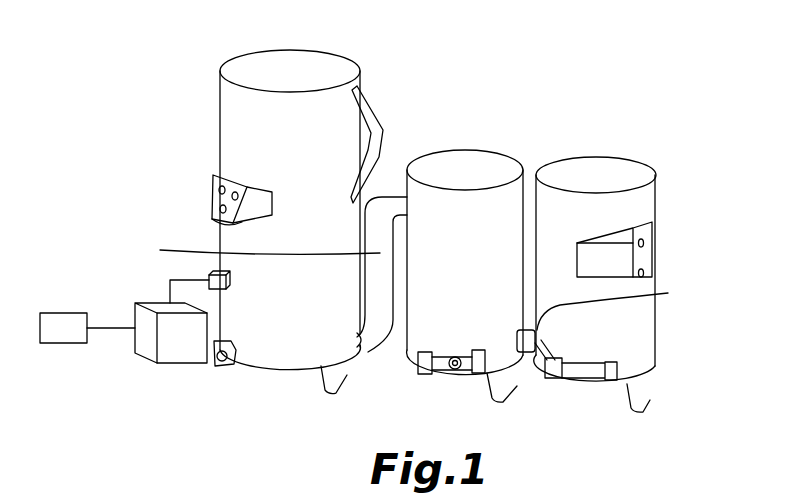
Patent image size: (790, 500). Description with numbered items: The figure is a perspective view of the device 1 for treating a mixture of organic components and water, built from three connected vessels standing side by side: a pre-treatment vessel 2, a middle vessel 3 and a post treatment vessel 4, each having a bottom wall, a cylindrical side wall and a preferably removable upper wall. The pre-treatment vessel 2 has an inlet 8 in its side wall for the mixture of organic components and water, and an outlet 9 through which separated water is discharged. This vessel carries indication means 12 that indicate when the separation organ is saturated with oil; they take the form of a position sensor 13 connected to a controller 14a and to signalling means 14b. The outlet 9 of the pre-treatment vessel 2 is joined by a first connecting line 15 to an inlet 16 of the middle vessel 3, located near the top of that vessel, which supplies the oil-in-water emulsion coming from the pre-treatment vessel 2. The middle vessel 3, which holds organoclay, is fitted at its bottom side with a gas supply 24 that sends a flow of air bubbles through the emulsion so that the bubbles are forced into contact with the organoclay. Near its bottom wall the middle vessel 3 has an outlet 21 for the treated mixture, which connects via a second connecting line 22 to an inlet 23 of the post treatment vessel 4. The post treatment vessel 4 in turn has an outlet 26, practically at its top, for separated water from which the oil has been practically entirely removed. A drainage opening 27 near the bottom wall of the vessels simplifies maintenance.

The device 1 is at (638, 135).
The pre-treatment vessel 2 is at (188, 107).
The middle vessel 3 is at (483, 142).
The post treatment vessel 4 is at (660, 197).
The inlet 8 is at (204, 205).
The outlet 9 is at (362, 347).
The indication means 12 is at (183, 382).
The position sensor 13 is at (208, 273).
The controller 14a is at (166, 364).
The signalling means 14b is at (63, 313).
The first connecting line 15 is at (255, 252).
The inlet 16 is at (402, 196).
The outlet 21 is at (528, 353).
The second connecting line 22 is at (614, 308).
The inlet 23 is at (560, 373).
The gas supply 24 is at (455, 373).
The outlet 26 is at (668, 250).
The drainage opening 27 is at (226, 367).